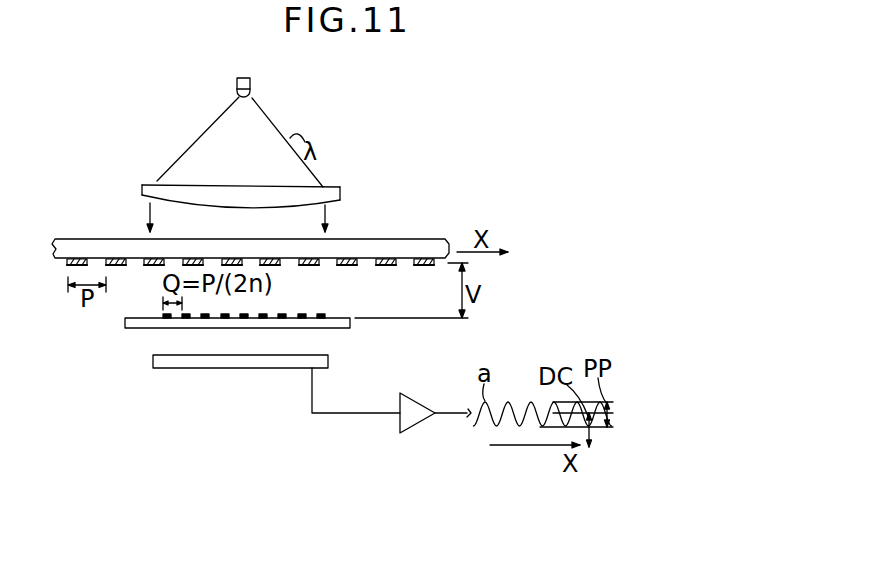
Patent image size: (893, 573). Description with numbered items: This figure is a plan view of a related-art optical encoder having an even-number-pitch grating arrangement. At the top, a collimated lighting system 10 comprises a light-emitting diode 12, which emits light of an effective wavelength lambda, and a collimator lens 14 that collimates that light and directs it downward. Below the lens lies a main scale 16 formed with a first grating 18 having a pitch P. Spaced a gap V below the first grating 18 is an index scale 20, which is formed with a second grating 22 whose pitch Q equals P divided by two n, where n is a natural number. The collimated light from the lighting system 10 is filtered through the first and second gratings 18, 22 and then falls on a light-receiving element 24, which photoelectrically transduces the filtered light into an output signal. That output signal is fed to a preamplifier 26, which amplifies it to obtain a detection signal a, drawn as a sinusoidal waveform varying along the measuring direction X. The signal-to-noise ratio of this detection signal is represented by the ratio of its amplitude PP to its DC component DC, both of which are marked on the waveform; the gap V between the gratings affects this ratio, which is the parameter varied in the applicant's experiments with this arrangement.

The collimated lighting system 10 is at (261, 143).
The light-emitting diode 12 is at (251, 83).
The collimator lens 14 is at (337, 190).
The main scale 16 is at (77, 238).
The first grating 18 is at (68, 266).
The index scale 20 is at (127, 328).
The second grating 22 is at (160, 313).
The light-receiving element 24 is at (195, 361).
The preamplifier 26 is at (420, 427).